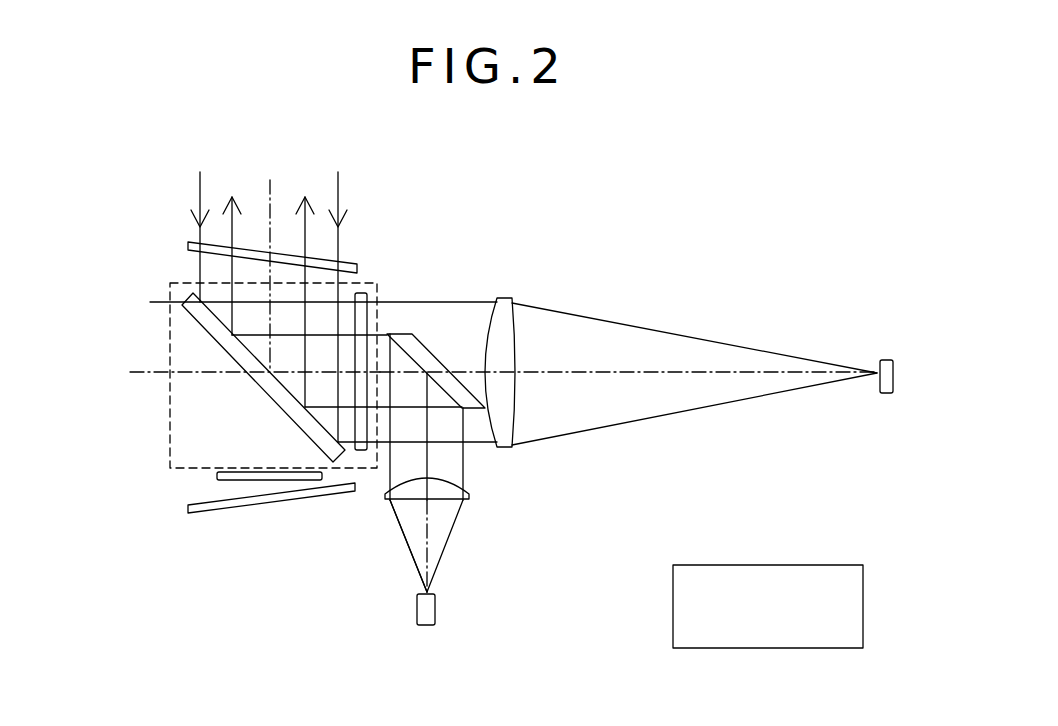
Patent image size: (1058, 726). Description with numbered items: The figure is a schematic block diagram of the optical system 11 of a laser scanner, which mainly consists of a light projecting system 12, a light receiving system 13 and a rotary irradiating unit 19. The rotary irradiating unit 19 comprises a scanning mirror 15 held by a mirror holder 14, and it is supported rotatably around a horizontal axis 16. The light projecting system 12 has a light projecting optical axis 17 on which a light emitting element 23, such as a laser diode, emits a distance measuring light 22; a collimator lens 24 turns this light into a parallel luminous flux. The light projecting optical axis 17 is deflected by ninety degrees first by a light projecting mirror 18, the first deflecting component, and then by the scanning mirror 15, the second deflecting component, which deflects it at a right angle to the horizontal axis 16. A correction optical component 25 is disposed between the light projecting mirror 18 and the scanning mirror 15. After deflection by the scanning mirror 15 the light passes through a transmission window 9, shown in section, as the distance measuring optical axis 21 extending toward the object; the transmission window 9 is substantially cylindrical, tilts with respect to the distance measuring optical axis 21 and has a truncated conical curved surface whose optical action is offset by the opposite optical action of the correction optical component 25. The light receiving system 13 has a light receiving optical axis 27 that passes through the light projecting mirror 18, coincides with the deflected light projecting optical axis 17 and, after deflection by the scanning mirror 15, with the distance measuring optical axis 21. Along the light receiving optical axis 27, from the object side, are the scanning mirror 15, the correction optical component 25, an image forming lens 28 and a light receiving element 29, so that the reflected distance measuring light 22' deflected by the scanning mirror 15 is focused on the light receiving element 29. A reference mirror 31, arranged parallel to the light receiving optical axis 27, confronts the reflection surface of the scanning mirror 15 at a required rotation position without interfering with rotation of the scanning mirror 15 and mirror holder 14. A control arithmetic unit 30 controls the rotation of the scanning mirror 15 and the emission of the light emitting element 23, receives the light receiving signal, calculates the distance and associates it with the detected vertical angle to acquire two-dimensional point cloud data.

The transmission window 9 is at (345, 262).
The optical system 11 is at (582, 161).
The light projecting system 12 is at (463, 543).
The light receiving system 13 is at (590, 297).
The mirror holder 14 is at (168, 450).
The scanning mirror 15 is at (207, 335).
The horizontal axis 16 is at (163, 372).
The light projecting optical axis 17 is at (427, 458).
The light projecting mirror 18 is at (420, 342).
The rotary irradiating unit 19 is at (169, 299).
The distance measuring optical axis 21 is at (273, 192).
The distance measuring light 22 is at (339, 349).
The reflected distance measuring light 22' is at (493, 292).
The light emitting element 23 is at (413, 615).
The collimator lens 24 is at (467, 498).
The correction optical component 25 is at (364, 292).
The light receiving optical axis 27 is at (633, 373).
The image forming lens 28 is at (503, 297).
The light receiving element 29 is at (885, 360).
The control arithmetic unit 30 is at (780, 565).
The reference mirror 31 is at (213, 475).